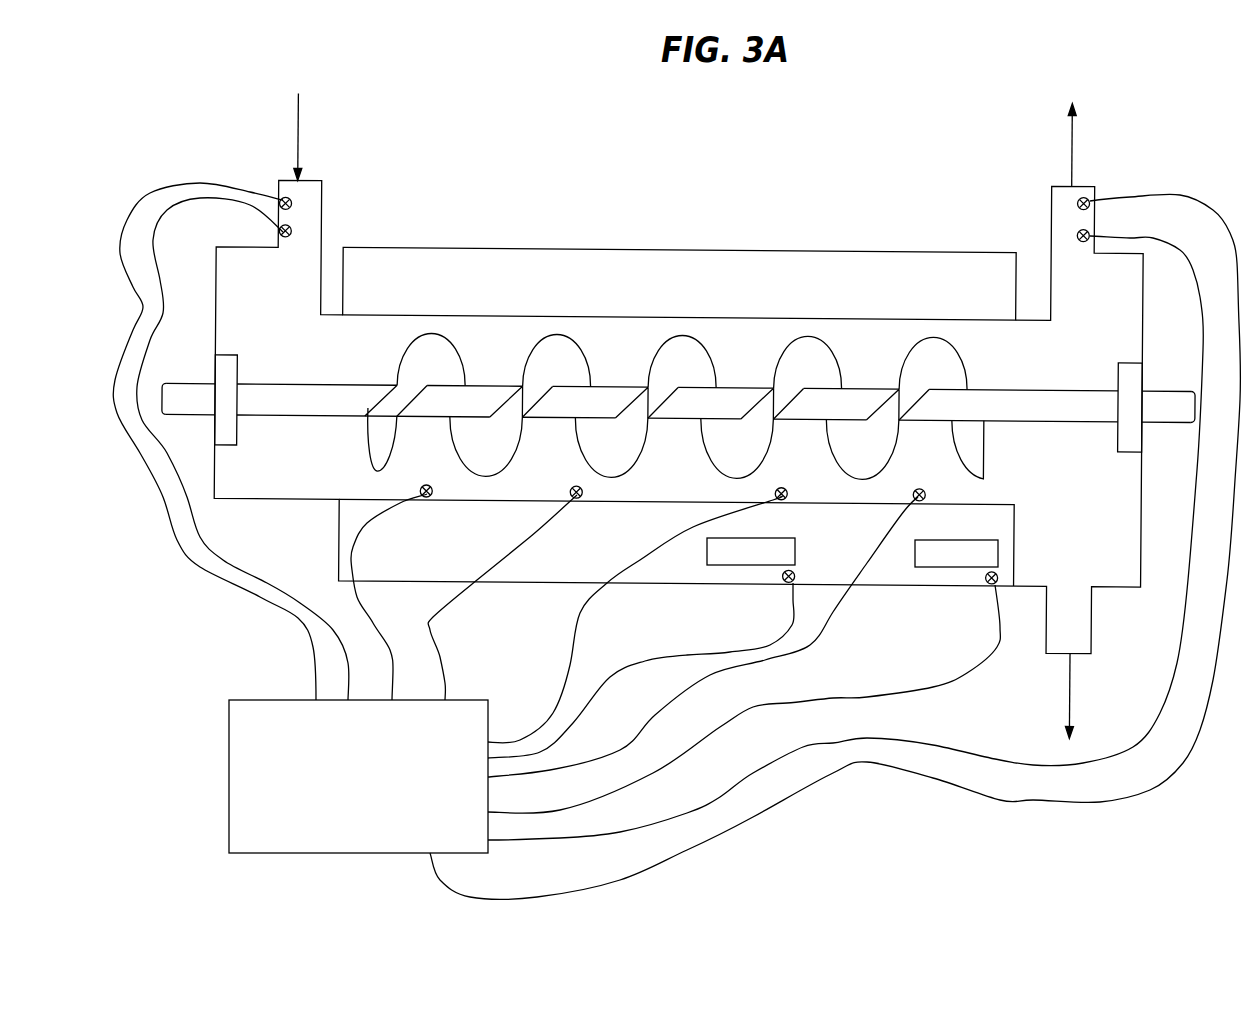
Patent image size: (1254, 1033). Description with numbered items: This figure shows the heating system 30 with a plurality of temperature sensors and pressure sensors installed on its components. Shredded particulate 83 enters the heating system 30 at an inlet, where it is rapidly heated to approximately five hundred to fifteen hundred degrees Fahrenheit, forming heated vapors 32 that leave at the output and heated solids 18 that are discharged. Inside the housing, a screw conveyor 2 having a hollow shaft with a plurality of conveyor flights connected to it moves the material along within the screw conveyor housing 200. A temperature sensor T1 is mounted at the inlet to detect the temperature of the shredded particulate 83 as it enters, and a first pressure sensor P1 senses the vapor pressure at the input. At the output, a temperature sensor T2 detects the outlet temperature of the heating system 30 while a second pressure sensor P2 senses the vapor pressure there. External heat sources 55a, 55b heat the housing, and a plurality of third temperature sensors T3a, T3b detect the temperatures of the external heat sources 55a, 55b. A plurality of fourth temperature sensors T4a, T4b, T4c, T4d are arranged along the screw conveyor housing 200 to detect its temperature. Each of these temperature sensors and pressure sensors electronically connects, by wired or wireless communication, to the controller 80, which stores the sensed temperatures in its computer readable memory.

The screw conveyor 2 is at (630, 383).
The screw conveyor housing 200 is at (553, 317).
The heating system 30 is at (890, 240).
The heated vapors 32 is at (1072, 140).
The shredded particulate 83 is at (299, 138).
The heated solids 18 is at (1071, 693).
The controller 80 is at (228, 770).
The external heat source 55a is at (917, 567).
The external heat source 55b is at (710, 567).
The temperature sensor T1 is at (280, 200).
The temperature sensor T2 is at (1092, 202).
The third temperature sensor T3a is at (989, 580).
The third temperature sensor T3b is at (786, 582).
The fourth temperature sensor T4a is at (430, 496).
The fourth temperature sensor T4b is at (580, 494).
The fourth temperature sensor T4c is at (790, 494).
The fourth temperature sensor T4d is at (926, 499).
The first pressure sensor P1 is at (282, 230).
The second pressure sensor P2 is at (1093, 238).